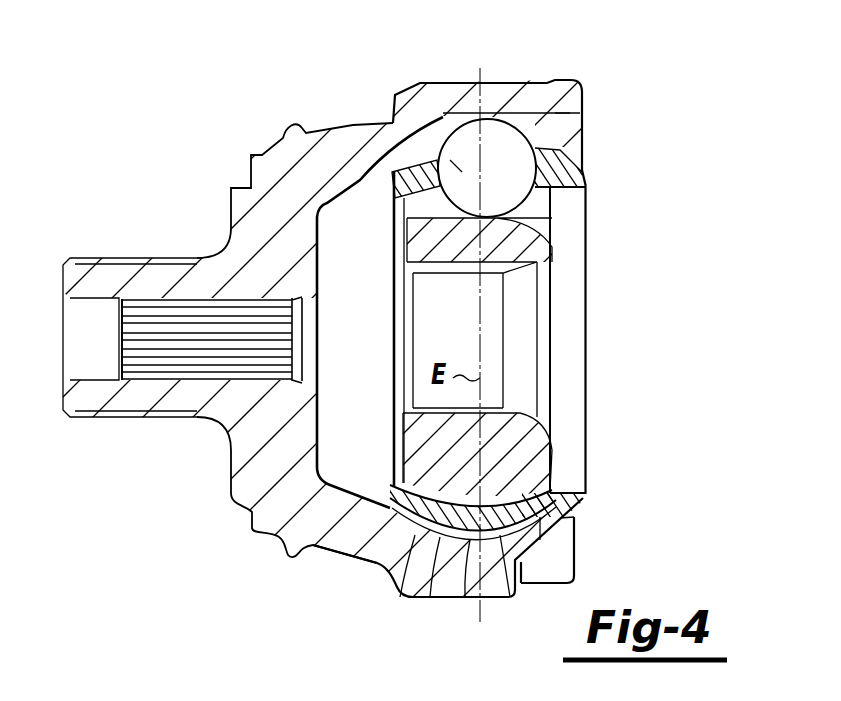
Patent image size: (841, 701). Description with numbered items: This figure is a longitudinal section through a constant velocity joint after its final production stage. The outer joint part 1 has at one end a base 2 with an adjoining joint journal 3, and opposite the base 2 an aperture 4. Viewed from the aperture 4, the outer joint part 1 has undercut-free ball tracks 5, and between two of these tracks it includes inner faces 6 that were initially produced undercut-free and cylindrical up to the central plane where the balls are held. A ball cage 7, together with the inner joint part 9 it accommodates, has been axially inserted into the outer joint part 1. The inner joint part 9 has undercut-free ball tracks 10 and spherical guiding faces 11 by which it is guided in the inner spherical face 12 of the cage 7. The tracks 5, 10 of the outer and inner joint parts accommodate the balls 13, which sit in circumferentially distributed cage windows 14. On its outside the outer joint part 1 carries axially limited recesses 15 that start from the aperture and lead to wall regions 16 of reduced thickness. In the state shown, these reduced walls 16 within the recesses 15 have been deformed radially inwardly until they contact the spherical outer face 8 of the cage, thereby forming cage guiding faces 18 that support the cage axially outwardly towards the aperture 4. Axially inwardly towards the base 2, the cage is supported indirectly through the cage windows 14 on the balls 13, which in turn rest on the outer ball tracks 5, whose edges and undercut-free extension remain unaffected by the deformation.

The outer joint part 1 is at (353, 125).
The base 2 is at (275, 212).
The joint journal 3 is at (145, 285).
The aperture 4 is at (584, 157).
The ball tracks 5 is at (558, 130).
The inner faces 6 is at (508, 525).
The ball cage 7 is at (427, 527).
The spherical outer face 8 is at (377, 563).
The inner joint part 9 is at (523, 443).
The ball tracks 10 is at (540, 218).
The spherical guiding faces 11 is at (457, 530).
The inner spherical face 12 is at (435, 513).
The balls 13 is at (500, 157).
The cage windows 14 is at (457, 170).
The recesses 15 is at (563, 550).
The wall regions 16 is at (543, 547).
The cage guiding faces 18 is at (587, 507).